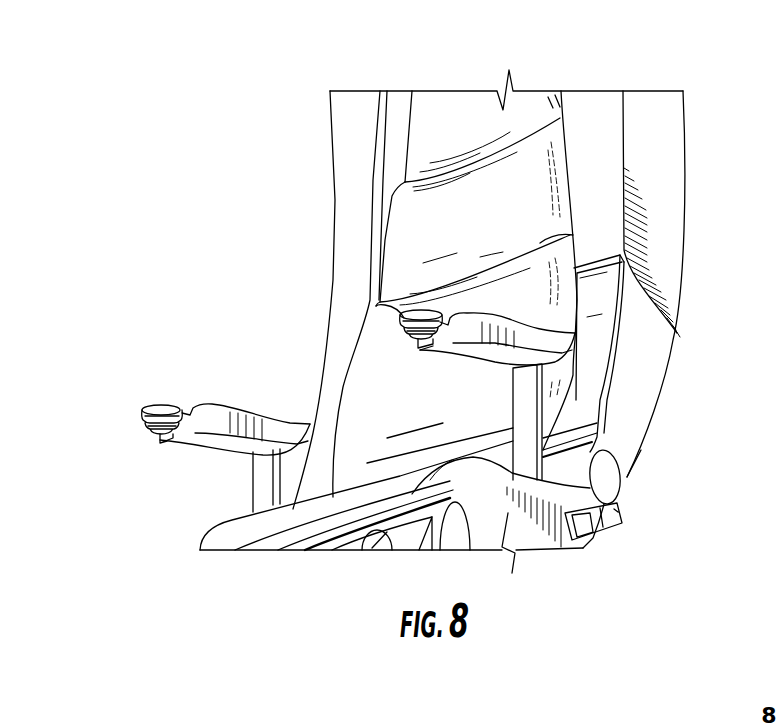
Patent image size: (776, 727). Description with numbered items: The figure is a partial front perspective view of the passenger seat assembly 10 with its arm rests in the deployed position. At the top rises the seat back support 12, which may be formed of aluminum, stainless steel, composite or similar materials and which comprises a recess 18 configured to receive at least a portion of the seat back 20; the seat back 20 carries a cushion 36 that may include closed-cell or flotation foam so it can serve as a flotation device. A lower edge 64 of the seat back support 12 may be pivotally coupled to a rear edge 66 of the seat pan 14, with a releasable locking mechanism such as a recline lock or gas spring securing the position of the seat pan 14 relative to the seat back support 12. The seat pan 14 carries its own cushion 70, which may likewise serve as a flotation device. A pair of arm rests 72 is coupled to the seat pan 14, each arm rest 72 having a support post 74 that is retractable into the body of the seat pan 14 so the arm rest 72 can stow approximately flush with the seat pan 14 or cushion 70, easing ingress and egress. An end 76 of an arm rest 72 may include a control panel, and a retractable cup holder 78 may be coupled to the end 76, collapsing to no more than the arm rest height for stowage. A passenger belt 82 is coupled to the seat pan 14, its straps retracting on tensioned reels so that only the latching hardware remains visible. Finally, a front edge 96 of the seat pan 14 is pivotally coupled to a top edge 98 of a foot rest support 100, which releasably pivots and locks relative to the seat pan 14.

The passenger seat assembly 10 is at (664, 86).
The seat back support 12 is at (672, 170).
The seat pan 14 is at (537, 543).
The recess 18 is at (400, 100).
The seat back 20 is at (405, 198).
The cushion 36 is at (545, 283).
The lower edge 64 is at (626, 464).
The rear edge 66 is at (593, 540).
The cushion 70 is at (230, 523).
The arm rest 72 is at (562, 350).
The support post 74 is at (542, 413).
The end 76 is at (520, 372).
The retractable cup holder 78 is at (400, 316).
The passenger belt 82 is at (613, 530).
The front edge 96 is at (622, 513).
The top edge 98 is at (430, 532).
The foot rest support 100 is at (388, 537).